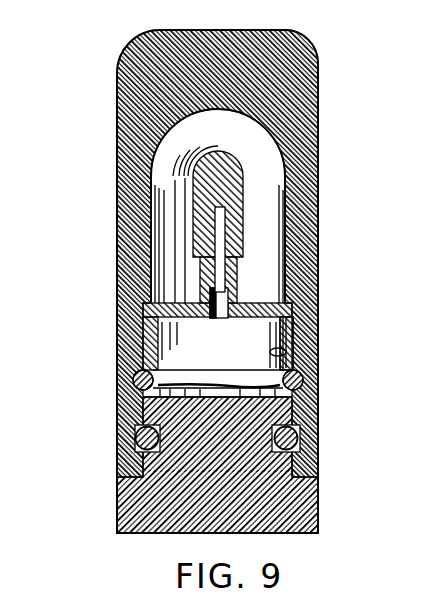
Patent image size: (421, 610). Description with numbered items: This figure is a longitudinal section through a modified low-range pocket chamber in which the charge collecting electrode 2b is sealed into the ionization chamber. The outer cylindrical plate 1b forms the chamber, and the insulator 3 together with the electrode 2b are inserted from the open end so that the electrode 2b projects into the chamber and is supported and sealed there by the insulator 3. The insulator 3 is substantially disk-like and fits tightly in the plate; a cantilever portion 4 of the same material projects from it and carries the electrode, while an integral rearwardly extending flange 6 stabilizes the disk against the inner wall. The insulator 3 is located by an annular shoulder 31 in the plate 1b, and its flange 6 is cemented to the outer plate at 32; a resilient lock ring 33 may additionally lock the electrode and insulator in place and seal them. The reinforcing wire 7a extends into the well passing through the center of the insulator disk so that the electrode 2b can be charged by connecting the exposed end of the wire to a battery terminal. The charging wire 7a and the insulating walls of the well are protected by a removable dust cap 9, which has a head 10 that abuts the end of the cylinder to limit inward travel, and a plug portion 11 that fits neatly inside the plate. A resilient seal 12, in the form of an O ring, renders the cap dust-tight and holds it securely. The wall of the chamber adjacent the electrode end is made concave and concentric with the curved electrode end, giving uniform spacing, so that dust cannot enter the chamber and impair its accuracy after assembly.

The dust cap 9 is at (345, 521).
The plate 1b is at (318, 210).
The charge collecting electrode 2b is at (193, 172).
The reinforcing wire 7a is at (226, 231).
The cantilever portion 4 is at (240, 264).
The annular shoulder 31 is at (292, 298).
The insulator 3 is at (287, 325).
The cement joint 32 is at (285, 347).
The flange 6 is at (283, 357).
The resilient lock ring 33 is at (302, 381).
The plug portion 11 is at (292, 410).
The resilient seal 12 is at (300, 438).
The head 10 is at (318, 489).